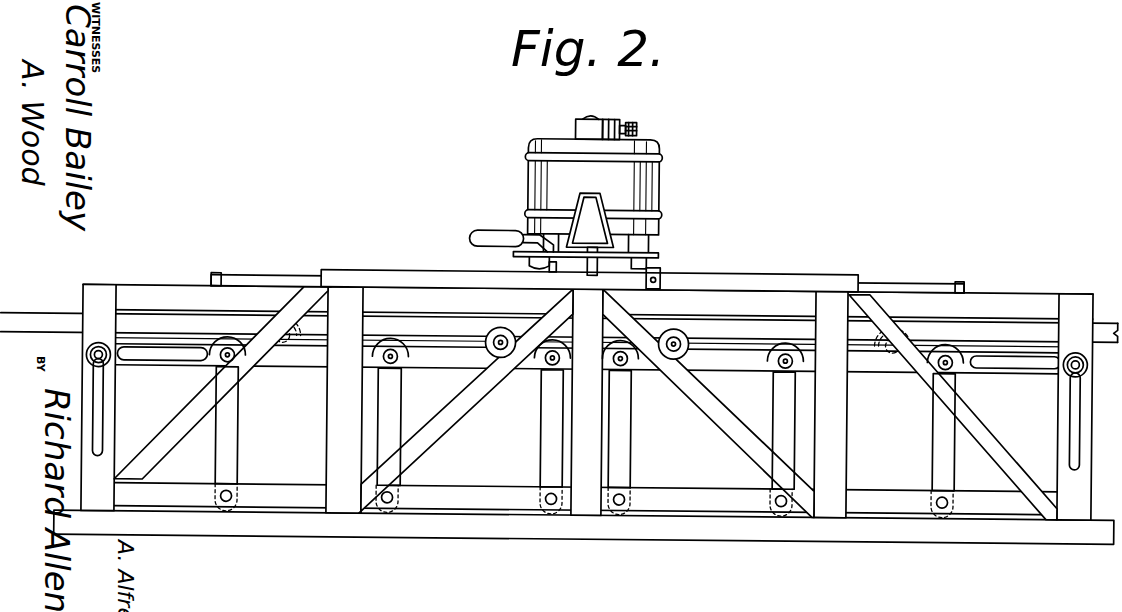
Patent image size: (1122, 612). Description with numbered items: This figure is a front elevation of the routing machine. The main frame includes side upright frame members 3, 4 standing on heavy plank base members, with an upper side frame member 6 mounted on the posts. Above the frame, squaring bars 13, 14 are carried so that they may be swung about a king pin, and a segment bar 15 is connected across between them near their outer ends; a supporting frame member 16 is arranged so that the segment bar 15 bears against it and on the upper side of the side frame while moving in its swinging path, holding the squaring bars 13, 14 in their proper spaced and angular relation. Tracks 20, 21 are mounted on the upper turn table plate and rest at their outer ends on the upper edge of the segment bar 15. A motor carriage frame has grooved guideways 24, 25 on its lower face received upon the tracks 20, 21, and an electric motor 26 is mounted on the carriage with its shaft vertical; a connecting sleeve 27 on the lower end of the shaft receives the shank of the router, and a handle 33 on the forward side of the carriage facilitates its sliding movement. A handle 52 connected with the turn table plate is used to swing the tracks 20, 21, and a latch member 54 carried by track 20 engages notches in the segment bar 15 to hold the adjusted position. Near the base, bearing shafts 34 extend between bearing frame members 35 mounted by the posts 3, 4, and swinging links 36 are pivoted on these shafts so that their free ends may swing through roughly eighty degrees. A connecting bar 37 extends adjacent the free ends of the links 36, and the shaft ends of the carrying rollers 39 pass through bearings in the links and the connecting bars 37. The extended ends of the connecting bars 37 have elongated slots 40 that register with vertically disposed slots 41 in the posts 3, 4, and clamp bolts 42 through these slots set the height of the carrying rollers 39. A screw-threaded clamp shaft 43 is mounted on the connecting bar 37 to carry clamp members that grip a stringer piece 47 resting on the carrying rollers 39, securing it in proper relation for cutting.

The side upright frame member 3 is at (101, 298).
The side upright frame member 4 is at (655, 530).
The upper side frame member 6 is at (1003, 302).
The squaring bar 13 is at (248, 280).
The squaring bar 14 is at (935, 289).
The segment bar 15 is at (392, 272).
The supporting frame member 16 is at (590, 302).
The track 20 is at (533, 273).
The track 21 is at (652, 288).
The grooved guideway 24 is at (520, 259).
The grooved guideway 25 is at (640, 263).
The electric motor 26 is at (637, 150).
The connecting sleeve 27 is at (600, 262).
The handle 33 is at (592, 218).
The bearing shaft 34 is at (227, 505).
The bearing frame member 35 is at (483, 505).
The swinging link 36 is at (392, 425).
The connecting bar 37 is at (455, 362).
The carrying roller 39 is at (382, 354).
The elongated slot 40 is at (152, 360).
The vertically disposed slot 41 is at (93, 395).
The clamp bolt 42 is at (86, 359).
The screw-threaded clamp shaft 43 is at (500, 351).
The stringer piece 47 is at (37, 320).
The handle 52 is at (484, 231).
The latch member 54 is at (546, 278).